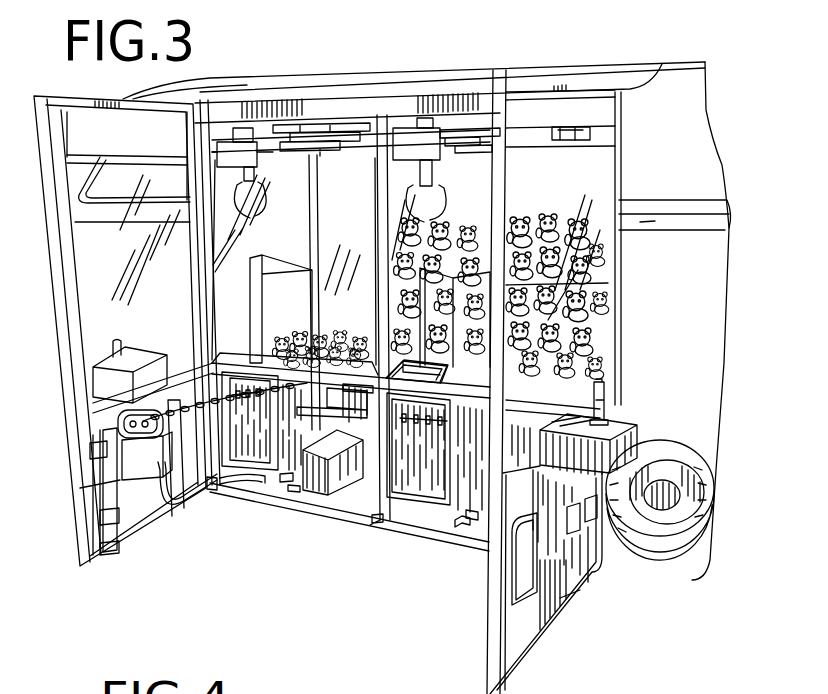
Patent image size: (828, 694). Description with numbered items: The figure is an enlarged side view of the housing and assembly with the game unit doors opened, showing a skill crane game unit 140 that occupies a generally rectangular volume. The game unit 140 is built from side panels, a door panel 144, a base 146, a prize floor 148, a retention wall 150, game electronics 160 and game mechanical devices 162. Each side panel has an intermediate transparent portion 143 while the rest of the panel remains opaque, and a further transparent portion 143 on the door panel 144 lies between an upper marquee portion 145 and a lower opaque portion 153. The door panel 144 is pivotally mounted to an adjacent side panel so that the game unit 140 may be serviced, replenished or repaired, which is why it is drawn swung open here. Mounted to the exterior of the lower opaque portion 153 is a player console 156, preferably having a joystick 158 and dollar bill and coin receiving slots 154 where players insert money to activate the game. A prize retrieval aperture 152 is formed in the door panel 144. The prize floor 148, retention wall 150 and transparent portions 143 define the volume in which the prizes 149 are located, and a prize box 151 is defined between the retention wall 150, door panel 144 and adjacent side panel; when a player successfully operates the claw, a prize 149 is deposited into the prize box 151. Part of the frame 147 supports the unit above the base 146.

The game unit 140 is at (413, 583).
The intermediate transparent portion 143 is at (210, 170).
The door panel 144 is at (572, 610).
The upper marquee portion 145 is at (589, 115).
The base 146 is at (479, 523).
The base frame 147 is at (383, 530).
The prize floor 148 is at (470, 393).
The prize 149 is at (517, 233).
The retention wall 150 is at (306, 305).
The prize box 151 is at (243, 306).
The prize retrieval aperture 152 is at (528, 604).
The lower opaque portion 153 is at (579, 563).
The dollar bill and coin receiving slots 154 is at (133, 467).
The player console 156 is at (640, 430).
The joystick 158 is at (602, 393).
The game electronics 160 is at (367, 407).
The game mechanical devices 162 is at (316, 120).